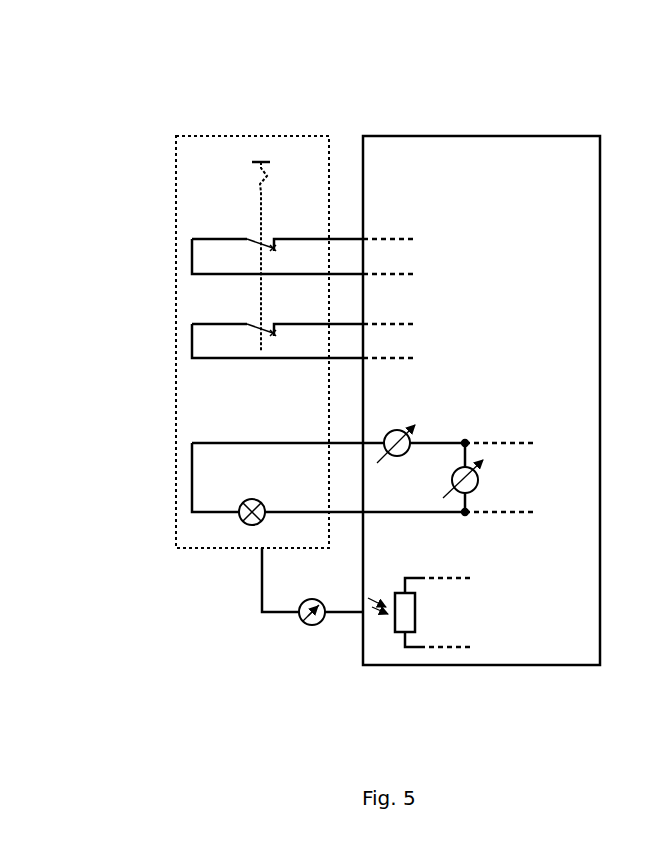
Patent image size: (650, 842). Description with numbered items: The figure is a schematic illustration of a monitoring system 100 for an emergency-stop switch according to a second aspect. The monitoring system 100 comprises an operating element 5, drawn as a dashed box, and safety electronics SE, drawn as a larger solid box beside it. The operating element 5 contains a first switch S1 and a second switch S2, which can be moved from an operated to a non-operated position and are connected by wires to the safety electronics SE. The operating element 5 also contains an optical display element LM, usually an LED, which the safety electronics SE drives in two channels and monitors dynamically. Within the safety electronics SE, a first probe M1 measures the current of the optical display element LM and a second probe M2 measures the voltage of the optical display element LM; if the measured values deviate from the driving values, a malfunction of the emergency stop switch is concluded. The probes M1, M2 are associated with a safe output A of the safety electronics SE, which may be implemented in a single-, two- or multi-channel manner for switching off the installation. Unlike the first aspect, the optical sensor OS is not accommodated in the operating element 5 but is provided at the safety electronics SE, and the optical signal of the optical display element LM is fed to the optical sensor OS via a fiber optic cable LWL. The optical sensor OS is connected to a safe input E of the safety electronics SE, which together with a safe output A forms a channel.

The monitoring system 100 is at (68, 99).
The operating element 5 is at (252, 342).
The safety electronics SE is at (481, 400).
The first switch S1 is at (302, 246).
The second switch S2 is at (302, 330).
The first probe M1 is at (396, 433).
The second probe M2 is at (479, 477).
The safe output A is at (540, 498).
The optical display element LM is at (248, 503).
The fiber optic cable LWL is at (297, 597).
The optical sensor OS is at (419, 612).
The safe input E is at (492, 589).